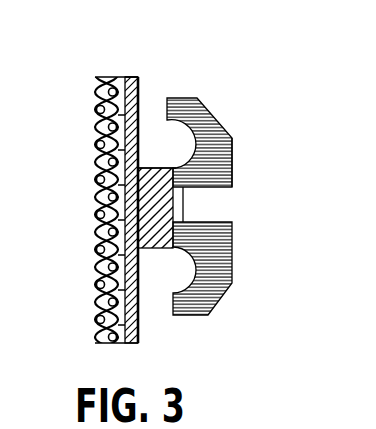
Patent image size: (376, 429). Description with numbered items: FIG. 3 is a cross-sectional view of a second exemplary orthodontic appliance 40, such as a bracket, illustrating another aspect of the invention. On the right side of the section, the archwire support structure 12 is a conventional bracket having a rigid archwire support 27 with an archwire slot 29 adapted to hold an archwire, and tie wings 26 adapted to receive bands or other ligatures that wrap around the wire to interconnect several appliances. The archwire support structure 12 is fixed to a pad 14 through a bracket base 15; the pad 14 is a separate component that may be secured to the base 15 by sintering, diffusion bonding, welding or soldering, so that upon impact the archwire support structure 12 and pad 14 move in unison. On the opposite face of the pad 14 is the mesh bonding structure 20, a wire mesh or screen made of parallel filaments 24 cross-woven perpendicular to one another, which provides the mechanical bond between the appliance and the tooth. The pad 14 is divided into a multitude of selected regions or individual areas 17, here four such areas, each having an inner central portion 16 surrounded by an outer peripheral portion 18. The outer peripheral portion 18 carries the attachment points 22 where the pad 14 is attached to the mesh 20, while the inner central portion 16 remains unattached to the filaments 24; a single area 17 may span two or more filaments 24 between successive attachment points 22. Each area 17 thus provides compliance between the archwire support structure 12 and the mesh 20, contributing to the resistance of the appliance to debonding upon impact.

The archwire support structure 12 is at (229, 183).
The pad 14 is at (138, 324).
The bracket base 15 is at (139, 84).
The inner central portion 16 is at (140, 105).
The selected region or individual area 17 is at (100, 148).
The outer peripheral portion 18 is at (138, 77).
The mesh bonding structure 20 is at (103, 343).
The attachment points 22 is at (122, 77).
The filaments 24 is at (96, 228).
The tie wings 26 is at (219, 128).
The rigid archwire support 27 is at (234, 161).
The archwire slot 29 is at (219, 217).
The second exemplary orthodontic appliance 40 is at (286, 128).